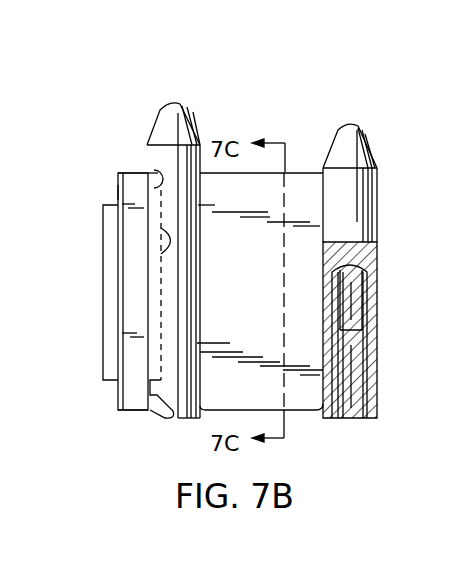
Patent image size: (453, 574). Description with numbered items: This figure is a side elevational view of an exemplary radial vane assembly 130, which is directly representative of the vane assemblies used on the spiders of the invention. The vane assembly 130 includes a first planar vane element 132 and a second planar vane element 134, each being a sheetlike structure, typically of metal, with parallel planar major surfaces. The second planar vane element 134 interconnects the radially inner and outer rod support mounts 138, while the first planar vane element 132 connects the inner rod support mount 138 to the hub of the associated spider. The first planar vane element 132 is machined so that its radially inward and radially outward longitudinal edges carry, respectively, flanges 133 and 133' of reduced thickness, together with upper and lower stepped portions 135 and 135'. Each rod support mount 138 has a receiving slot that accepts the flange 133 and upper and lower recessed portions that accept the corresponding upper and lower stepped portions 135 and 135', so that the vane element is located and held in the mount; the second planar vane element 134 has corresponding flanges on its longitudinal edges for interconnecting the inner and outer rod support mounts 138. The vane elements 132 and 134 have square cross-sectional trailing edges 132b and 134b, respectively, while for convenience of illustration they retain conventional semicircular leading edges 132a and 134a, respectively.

The vane assembly 130 is at (155, 82).
The first planar vane element 132 is at (142, 302).
The semicircular leading edge 132a is at (128, 412).
The square cross-sectional trailing edge 132b is at (130, 172).
The flange 133 is at (71, 292).
The flange 133' is at (97, 267).
The second planar vane element 134 is at (265, 262).
The semicircular leading edge 134a is at (302, 412).
The square cross-sectional trailing edge 134b is at (308, 168).
The upper stepped portion 135 is at (84, 291).
The lower stepped portion 135' is at (126, 281).
The rod support mount 138 is at (182, 102).